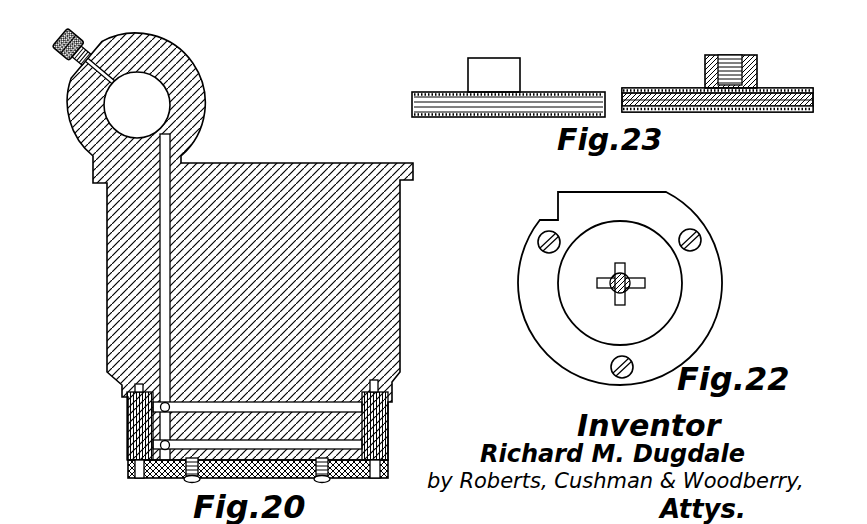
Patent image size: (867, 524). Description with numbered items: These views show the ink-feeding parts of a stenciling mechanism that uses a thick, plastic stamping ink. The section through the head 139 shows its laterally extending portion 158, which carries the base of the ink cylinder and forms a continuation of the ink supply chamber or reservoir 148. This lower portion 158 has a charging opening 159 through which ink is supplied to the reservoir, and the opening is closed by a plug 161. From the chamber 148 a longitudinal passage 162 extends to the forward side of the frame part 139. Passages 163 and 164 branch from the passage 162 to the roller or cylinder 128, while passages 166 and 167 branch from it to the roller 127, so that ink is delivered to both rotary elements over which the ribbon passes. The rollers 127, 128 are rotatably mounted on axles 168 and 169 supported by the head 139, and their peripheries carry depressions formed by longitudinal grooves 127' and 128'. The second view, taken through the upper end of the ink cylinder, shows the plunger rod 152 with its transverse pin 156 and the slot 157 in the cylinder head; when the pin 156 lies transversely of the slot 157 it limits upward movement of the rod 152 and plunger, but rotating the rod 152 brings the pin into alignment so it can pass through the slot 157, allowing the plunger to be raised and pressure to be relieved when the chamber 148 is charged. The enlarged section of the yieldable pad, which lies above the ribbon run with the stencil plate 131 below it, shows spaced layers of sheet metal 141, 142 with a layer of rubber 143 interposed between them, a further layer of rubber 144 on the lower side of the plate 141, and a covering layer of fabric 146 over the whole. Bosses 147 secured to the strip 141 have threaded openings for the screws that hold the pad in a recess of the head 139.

In FIG. 20, the frame part or head 139 is at (393, 310).
In FIG. 20, the laterally extending portion 158 is at (183, 66).
In FIG. 20, the ink supply chamber or reservoir 148 is at (160, 97).
In FIG. 20, the charging opening 159 is at (73, 93).
In FIG. 20, the plug 161 is at (64, 38).
In FIG. 20, the longitudinal passage 162 is at (164, 160).
In FIG. 20, the passage 163 is at (347, 400).
In FIG. 20, the passage 164 is at (350, 447).
In FIG. 20, the passage 166 is at (157, 398).
In FIG. 20, the roller or cylinder 127 is at (105, 426).
In FIG. 20, the longitudinal grooves 127' is at (100, 400).
In FIG. 20, the roller or cylinder 128 is at (420, 425).
In FIG. 20, the longitudinal grooves 128' is at (418, 387).
In FIG. 20, the passage 167 is at (162, 473).
In FIG. 20, the axle 168 is at (376, 470).
In FIG. 20, the axle 169 is at (133, 473).
In FIG. 23, the stencil plate 131 is at (549, 129).
In FIG. 23, the layer of sheet metal 141 is at (760, 110).
In FIG. 23, the layer of sheet metal 142 is at (767, 87).
In FIG. 23, the layer of rubber 143 is at (792, 87).
In FIG. 23, the layer of rubber 144 is at (722, 112).
In FIG. 23, the layer of fabric 146 is at (793, 112).
In FIG. 23, the bosses 147 is at (708, 58).
In FIG. 22, the plunger rod 152 is at (627, 303).
In FIG. 22, the transverse pin 156 is at (618, 268).
In FIG. 22, the slot 157 is at (638, 278).